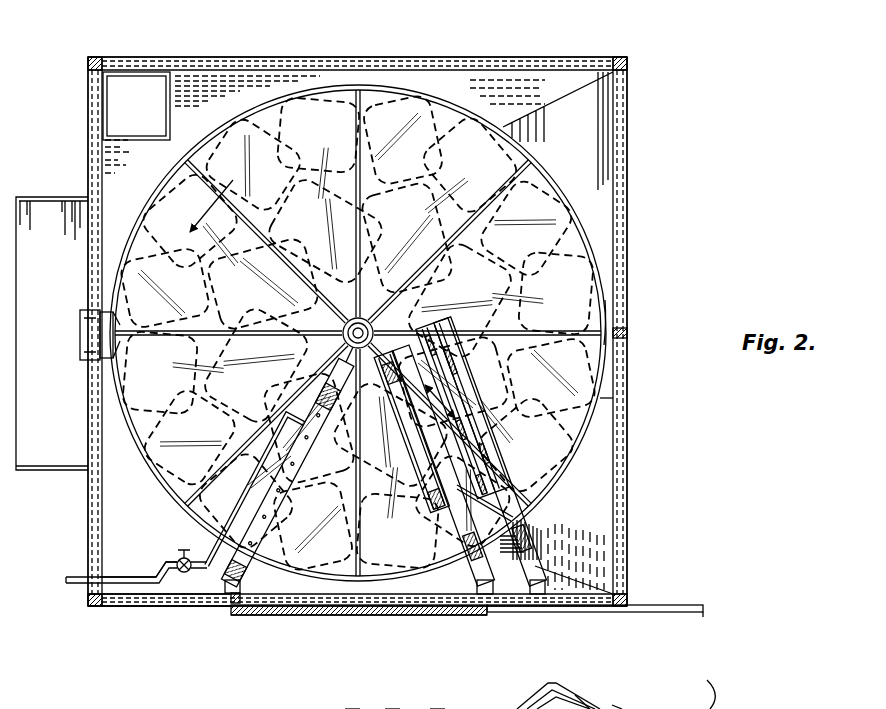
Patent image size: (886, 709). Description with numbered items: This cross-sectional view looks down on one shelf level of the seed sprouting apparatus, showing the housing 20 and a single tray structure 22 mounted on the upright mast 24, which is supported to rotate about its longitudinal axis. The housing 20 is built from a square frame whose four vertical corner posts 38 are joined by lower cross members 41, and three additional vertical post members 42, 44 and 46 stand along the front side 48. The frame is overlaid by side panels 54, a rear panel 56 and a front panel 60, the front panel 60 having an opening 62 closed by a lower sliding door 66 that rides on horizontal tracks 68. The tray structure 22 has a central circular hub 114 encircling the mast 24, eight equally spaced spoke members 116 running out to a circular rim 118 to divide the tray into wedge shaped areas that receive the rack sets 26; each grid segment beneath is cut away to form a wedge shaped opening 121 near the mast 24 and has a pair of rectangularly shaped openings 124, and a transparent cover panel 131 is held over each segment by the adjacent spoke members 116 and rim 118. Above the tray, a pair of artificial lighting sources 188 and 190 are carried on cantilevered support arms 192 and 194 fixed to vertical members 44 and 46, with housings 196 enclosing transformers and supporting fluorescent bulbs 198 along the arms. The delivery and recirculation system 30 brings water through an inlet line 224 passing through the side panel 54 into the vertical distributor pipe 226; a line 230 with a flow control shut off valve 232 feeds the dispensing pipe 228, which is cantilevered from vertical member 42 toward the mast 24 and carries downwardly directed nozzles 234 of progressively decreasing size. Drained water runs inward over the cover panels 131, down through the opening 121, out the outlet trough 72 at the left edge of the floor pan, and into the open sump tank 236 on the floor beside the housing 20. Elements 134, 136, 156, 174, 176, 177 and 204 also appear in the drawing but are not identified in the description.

The housing 20 is at (647, 190).
The tray structure 22 is at (592, 462).
The upright mast 24 is at (366, 316).
The rack set 26 is at (472, 708).
The delivery and recirculation system 30 is at (155, 550).
The vertical corner post 38 is at (95, 57).
The lower cross member 41 is at (450, 70).
The vertical post member 42 is at (227, 592).
The vertical post member 44 is at (490, 598).
The vertical post member 46 is at (540, 598).
The front side 48 is at (183, 613).
The side panel 54 is at (628, 278).
The rear panel 56 is at (305, 57).
The front panel 60 is at (150, 606).
The opening 62 is at (328, 618).
The lower sliding door 66 is at (300, 612).
The horizontal track 68 is at (700, 617).
The outlet trough 72 is at (82, 345).
The central circular hub 114 is at (322, 318).
The spoke member 116 is at (600, 318).
The circular rim 118 is at (603, 400).
The wedge shaped opening 121 is at (375, 328).
The rectangularly shaped opening 124 is at (637, 362).
The cover panel 131 is at (167, 175).
The element 134 is at (357, 697).
The element 136 is at (540, 682).
The element 156 is at (399, 703).
The element 174 is at (585, 700).
The element 176 is at (636, 697).
The element 177 is at (620, 705).
The artificial lighting source 188 is at (452, 550).
The artificial lighting source 190 is at (545, 552).
The cantilevered support arm 192 is at (472, 570).
The cantilevered support arm 194 is at (536, 565).
The housing 196 is at (537, 517).
The fluorescent bulb 198 is at (545, 483).
The control box 204 is at (172, 90).
The water inlet line 224 is at (70, 583).
The distributor pipe 226 is at (157, 560).
The dispensing pipe 228 is at (255, 580).
The line 230 is at (285, 418).
The flow control shut off valve 232 is at (182, 553).
The nozzle 234 is at (305, 452).
The sump tank 236 is at (56, 197).